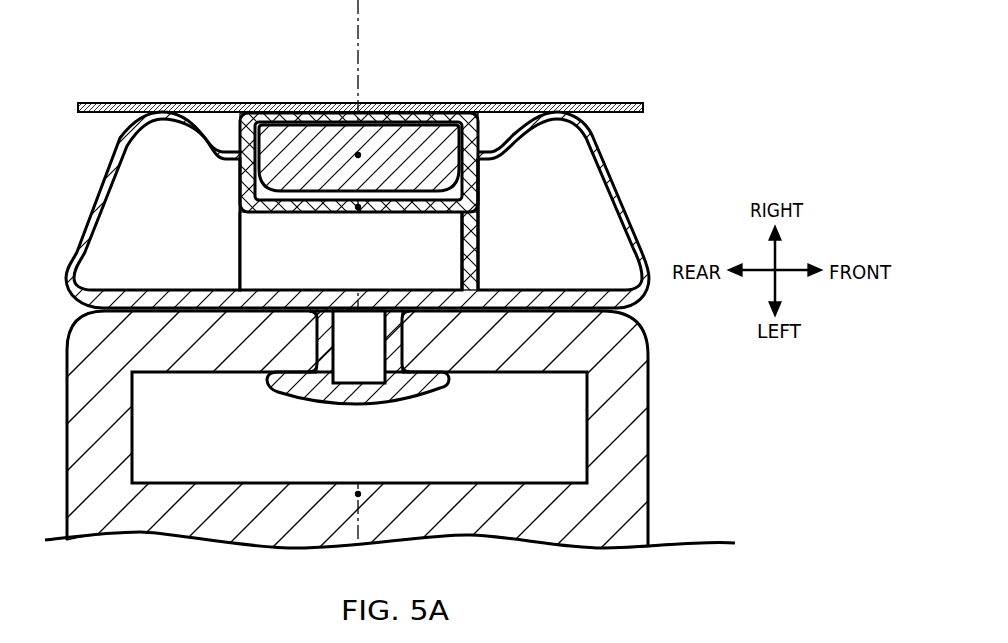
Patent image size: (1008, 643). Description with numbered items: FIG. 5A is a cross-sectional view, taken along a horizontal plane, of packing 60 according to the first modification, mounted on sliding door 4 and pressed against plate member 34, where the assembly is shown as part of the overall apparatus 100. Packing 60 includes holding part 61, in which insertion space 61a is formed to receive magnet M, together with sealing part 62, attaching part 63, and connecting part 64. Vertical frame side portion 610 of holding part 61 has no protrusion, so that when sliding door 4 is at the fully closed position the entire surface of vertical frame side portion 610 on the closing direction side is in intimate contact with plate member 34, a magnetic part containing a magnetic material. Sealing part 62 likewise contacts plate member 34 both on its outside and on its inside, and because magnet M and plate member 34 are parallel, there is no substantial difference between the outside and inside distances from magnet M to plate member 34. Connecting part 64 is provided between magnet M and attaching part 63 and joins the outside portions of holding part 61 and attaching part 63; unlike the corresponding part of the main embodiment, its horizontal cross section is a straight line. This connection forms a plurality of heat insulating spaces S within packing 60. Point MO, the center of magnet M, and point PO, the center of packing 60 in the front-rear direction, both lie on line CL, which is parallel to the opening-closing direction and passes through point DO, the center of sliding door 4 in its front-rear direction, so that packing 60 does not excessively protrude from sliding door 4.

The sliding door 4 is at (694, 427).
The plate member 34 is at (152, 102).
The packing 60 is at (552, 56).
The holding part 61 is at (240, 178).
The vertical frame side portion 610 is at (393, 110).
The insertion space 61a is at (335, 201).
The sealing part 62 is at (108, 158).
The attaching part 63 is at (437, 389).
The connecting part 64 is at (478, 232).
The apparatus 100 is at (706, 101).
The magnet M is at (305, 197).
The point MO is at (357, 153).
The point PO is at (358, 209).
The point DO is at (358, 492).
The line CL is at (357, 10).
The heat insulating space S is at (341, 222).